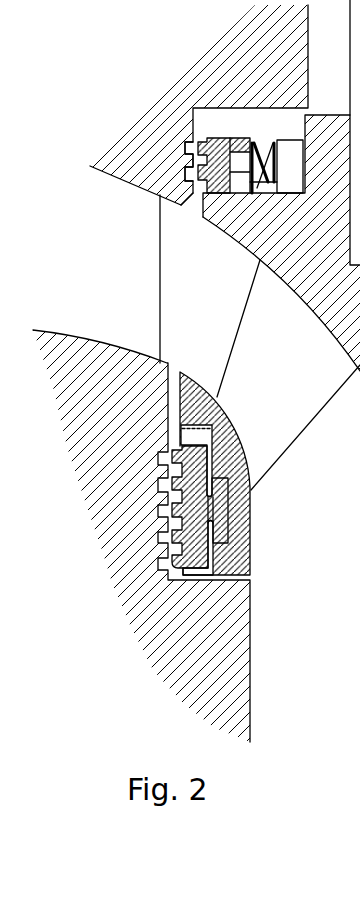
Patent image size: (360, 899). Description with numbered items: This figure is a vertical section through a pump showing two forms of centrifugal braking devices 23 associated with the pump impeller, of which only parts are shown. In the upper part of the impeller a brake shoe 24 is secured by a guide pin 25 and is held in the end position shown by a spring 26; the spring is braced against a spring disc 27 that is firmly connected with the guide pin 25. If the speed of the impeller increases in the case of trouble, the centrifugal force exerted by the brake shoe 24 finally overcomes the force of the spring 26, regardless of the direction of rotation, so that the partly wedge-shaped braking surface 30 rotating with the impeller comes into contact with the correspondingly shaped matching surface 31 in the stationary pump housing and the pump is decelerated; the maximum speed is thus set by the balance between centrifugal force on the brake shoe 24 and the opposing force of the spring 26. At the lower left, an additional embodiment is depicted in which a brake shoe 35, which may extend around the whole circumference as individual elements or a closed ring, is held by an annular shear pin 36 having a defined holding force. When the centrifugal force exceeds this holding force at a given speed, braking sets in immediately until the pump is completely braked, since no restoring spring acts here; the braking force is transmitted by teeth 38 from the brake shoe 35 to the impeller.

The braking device 23 is at (161, 194).
The brake shoe 24 is at (217, 146).
The guide pin 25 is at (244, 168).
The spring 26 is at (263, 150).
The spring disc 27 is at (288, 150).
The braking surface 30 is at (199, 195).
The matching surface 31 is at (190, 174).
The brake shoe 35 is at (203, 557).
The annular shear pin 36 is at (214, 512).
The teeth 38 is at (221, 408).